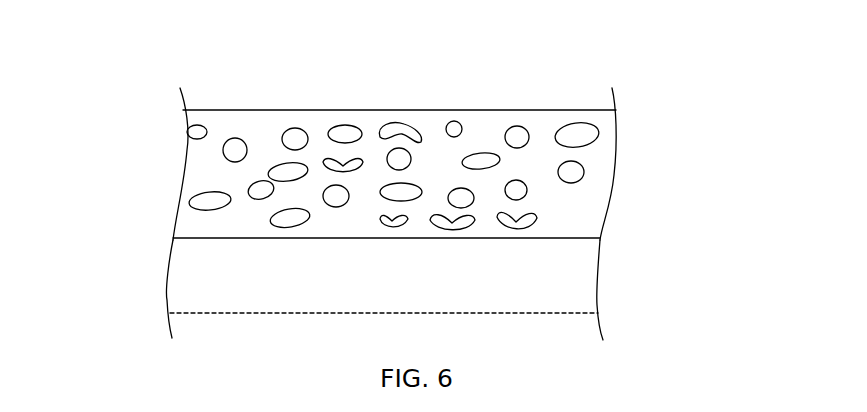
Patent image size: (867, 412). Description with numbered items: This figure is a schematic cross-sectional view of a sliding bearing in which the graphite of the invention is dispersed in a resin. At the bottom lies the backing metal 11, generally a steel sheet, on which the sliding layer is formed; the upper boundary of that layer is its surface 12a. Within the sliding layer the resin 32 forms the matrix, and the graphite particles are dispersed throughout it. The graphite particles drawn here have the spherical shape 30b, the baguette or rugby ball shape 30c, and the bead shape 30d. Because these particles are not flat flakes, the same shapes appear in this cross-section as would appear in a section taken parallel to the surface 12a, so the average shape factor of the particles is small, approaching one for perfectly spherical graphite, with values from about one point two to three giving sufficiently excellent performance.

The backing metal 11 is at (407, 283).
The surface 12a is at (313, 110).
The resin 32 is at (602, 177).
The spherical shape graphite 30b is at (455, 121).
The baguette or rugby ball shape graphite 30c is at (593, 133).
The bead shape graphite 30d is at (190, 126).